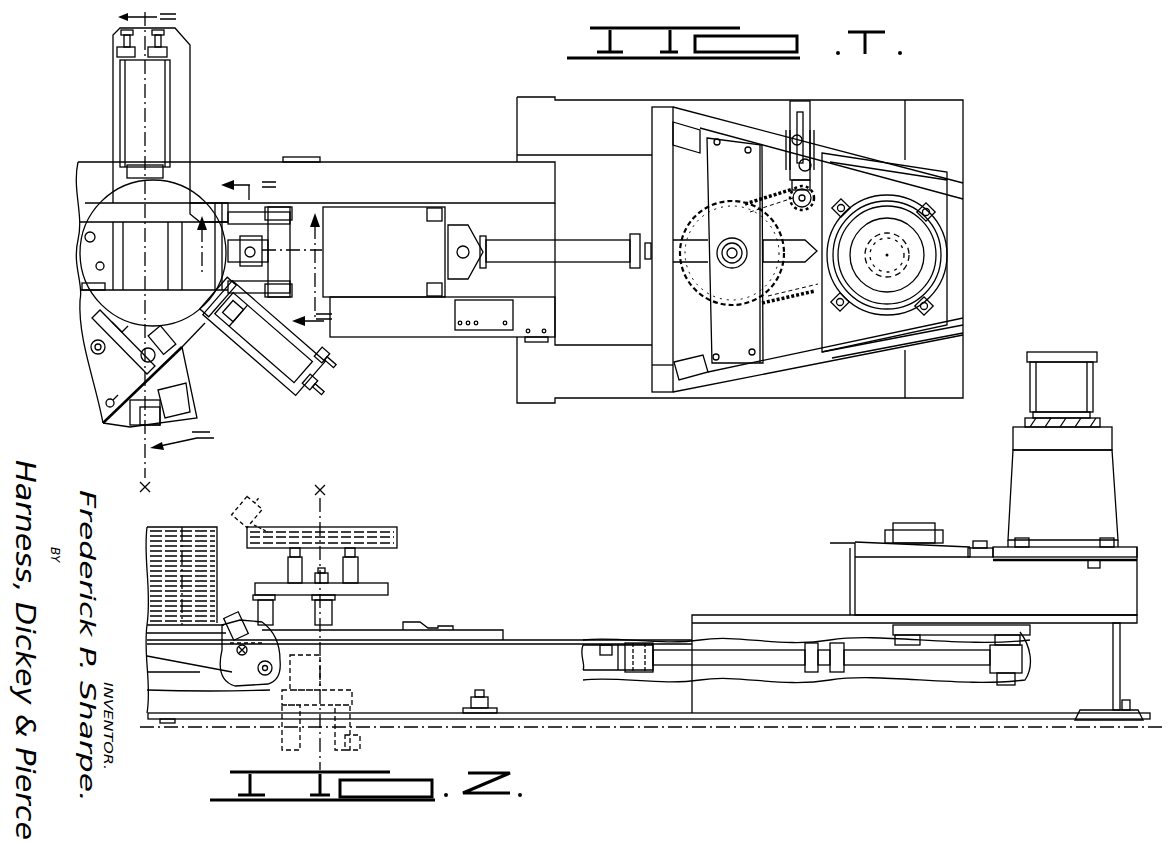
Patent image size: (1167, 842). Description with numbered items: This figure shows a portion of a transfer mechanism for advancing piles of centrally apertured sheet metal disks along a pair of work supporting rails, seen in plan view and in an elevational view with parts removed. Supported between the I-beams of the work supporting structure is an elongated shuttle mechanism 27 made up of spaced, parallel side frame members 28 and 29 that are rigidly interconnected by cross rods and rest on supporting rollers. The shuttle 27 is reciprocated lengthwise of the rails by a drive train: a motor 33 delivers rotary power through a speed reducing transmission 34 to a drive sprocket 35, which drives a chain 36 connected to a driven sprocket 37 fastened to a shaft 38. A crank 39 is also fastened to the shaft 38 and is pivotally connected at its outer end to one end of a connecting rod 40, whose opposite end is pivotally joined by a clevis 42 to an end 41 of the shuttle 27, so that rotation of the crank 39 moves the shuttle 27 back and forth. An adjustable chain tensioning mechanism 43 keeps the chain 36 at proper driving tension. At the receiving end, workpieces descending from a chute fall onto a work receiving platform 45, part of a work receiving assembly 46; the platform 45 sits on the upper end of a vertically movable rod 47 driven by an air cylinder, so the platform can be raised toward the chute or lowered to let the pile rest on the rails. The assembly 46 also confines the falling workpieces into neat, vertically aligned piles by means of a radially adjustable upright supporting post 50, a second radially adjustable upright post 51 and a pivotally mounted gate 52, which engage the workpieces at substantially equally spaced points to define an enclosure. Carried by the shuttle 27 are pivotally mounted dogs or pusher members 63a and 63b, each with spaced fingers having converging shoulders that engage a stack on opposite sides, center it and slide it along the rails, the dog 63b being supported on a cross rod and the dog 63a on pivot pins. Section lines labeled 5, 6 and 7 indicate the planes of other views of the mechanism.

In FIG. 1, the section line 5- 5 is at (236, 185).
In FIG. 1, the section line 6- 6 is at (263, 265).
In FIG. 1, the section line 7- 7 is at (146, 252).
In FIG. 1, the shuttle mechanism 27 is at (350, 202).
In FIG. 1, the side frame member 28 is at (378, 294).
In FIG. 1, the side frame member 29 is at (374, 214).
In FIG. 3, the motor 33 is at (1038, 377).
In FIG. 3, the speed reducing transmission 34 is at (1020, 493).
In FIG. 1, the drive sprocket 35 is at (913, 258).
In FIG. 1, the chain 36 is at (790, 300).
In FIG. 1, the driven sprocket 37 is at (693, 277).
In FIG. 1, the shaft 38 is at (733, 243).
In FIG. 3, the shaft 38 is at (893, 625).
In FIG. 3, the crank 39 is at (1025, 636).
In FIG. 1, the connecting rod 40 is at (578, 248).
In FIG. 3, the connecting rod 40 is at (897, 660).
In FIG. 1, the end of the shuttle 41 is at (440, 238).
In FIG. 3, the end of the shuttle 41 is at (618, 642).
In FIG. 1, the clevis 42 is at (458, 238).
In FIG. 3, the clevis 42 is at (632, 643).
In FIG. 1, the adjustable chain tensioning mechanism 43 is at (808, 118).
In FIG. 3, the work receiving platform 45 is at (358, 569).
In FIG. 3, the work receiving assembly 46 is at (365, 500).
In FIG. 3, the vertically movable rod 47 is at (335, 612).
In FIG. 1, the radially adjustable upright supporting post 50 is at (153, 168).
In FIG. 1, the radially adjustable upright post 51 is at (222, 288).
In FIG. 1, the pivotally mounted gate 52 is at (88, 320).
In FIG. 3, the pivotally mounted gate 52 is at (262, 505).
In FIG. 1, the dog or pusher member 63a is at (228, 216).
In FIG. 3, the dog or pusher member 63a is at (422, 620).
In FIG. 3, the dog or pusher member 63b is at (262, 625).